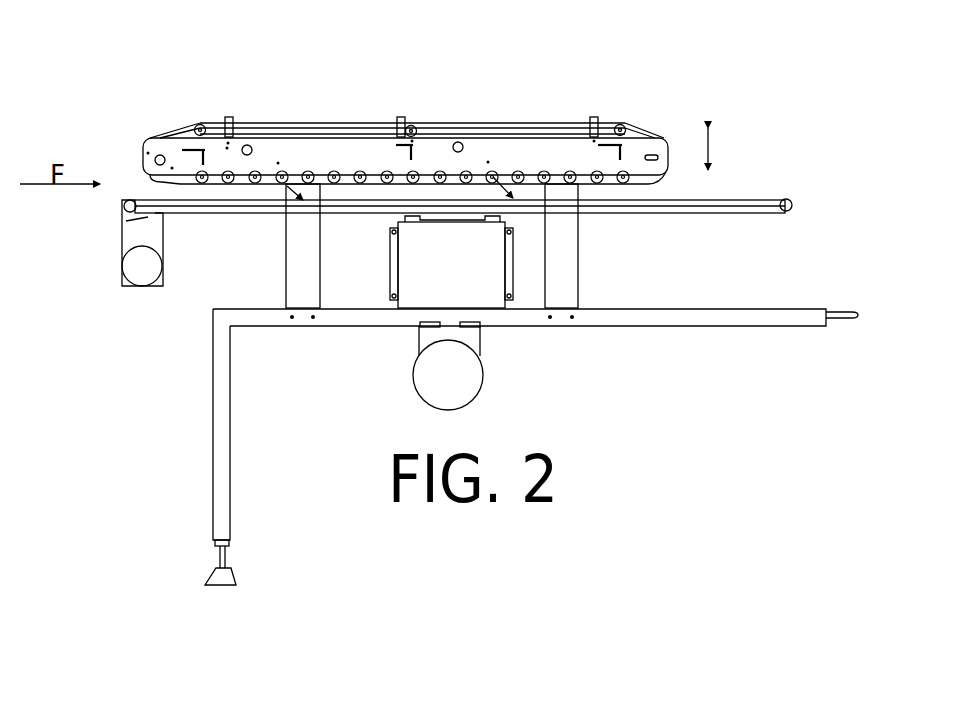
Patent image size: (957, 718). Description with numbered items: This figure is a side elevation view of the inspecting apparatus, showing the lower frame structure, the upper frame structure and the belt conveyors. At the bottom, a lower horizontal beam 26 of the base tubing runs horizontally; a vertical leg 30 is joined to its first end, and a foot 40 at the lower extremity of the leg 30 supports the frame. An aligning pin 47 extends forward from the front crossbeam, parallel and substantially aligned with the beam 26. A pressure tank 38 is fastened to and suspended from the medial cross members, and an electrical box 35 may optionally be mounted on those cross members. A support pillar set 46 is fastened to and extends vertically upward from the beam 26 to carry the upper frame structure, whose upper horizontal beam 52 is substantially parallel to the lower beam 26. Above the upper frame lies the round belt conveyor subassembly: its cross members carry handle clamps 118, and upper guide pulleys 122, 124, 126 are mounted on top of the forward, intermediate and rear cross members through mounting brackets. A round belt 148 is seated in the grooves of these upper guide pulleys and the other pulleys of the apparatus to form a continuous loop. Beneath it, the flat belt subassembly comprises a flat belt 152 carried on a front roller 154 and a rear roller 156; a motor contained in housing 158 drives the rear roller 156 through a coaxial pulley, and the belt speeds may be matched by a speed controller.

The lower horizontal beam 26 is at (687, 320).
The vertical leg 30 is at (214, 422).
The electrical box 35 is at (450, 273).
The pressure tank 38 is at (475, 390).
The foot 40 is at (240, 580).
The support pillar set 46 is at (288, 263).
The aligning pin 47 is at (845, 323).
The upper horizontal beam 52 is at (338, 140).
The handle clamp 118 is at (597, 148).
The upper guide pulley 122 is at (199, 127).
The upper guide pulley 124 is at (413, 125).
The upper guide pulley 126 is at (623, 125).
The round belt 148 is at (250, 122).
The flat belt 152 is at (150, 197).
The front roller 154 is at (790, 211).
The rear roller 156 is at (125, 203).
The motor housing 158 is at (142, 288).